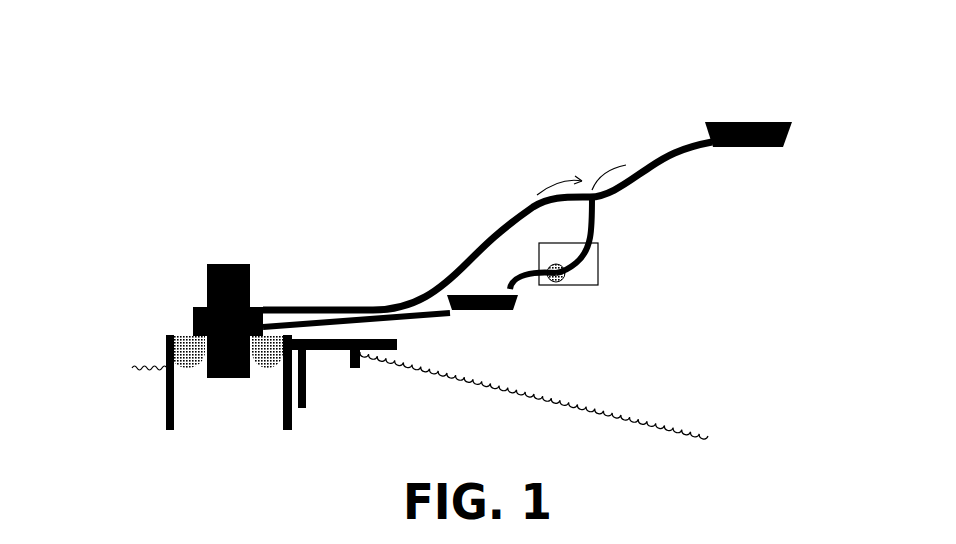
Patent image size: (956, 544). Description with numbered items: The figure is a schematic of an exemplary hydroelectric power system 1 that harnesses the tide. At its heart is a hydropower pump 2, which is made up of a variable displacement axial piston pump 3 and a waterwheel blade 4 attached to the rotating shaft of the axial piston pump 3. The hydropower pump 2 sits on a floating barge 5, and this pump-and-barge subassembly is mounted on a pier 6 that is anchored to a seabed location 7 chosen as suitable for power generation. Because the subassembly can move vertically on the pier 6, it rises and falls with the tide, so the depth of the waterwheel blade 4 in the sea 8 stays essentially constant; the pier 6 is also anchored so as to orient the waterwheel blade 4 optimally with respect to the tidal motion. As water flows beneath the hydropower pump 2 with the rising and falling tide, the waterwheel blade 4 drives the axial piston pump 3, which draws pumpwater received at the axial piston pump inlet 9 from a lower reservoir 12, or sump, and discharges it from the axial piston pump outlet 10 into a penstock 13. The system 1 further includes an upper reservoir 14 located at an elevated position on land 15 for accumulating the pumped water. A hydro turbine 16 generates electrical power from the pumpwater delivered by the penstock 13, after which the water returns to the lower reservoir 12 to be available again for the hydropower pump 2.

The hydroelectric power system 1 is at (255, 90).
The hydropower pump 2 is at (269, 340).
The variable displacement axial piston pump 3 is at (193, 317).
The waterwheel blade 4 is at (250, 280).
The floating barge 5 is at (195, 368).
The pier 6 is at (303, 408).
The seabed location 7 is at (303, 437).
The sea 8 is at (142, 380).
The axial piston pump inlet 9 is at (400, 320).
The axial piston pump outlet 10 is at (310, 307).
The lower reservoir 12 is at (511, 310).
The penstock 13 is at (582, 173).
The upper reservoir 14 is at (747, 148).
The land 15 is at (718, 350).
The hydro turbine 16 is at (582, 273).